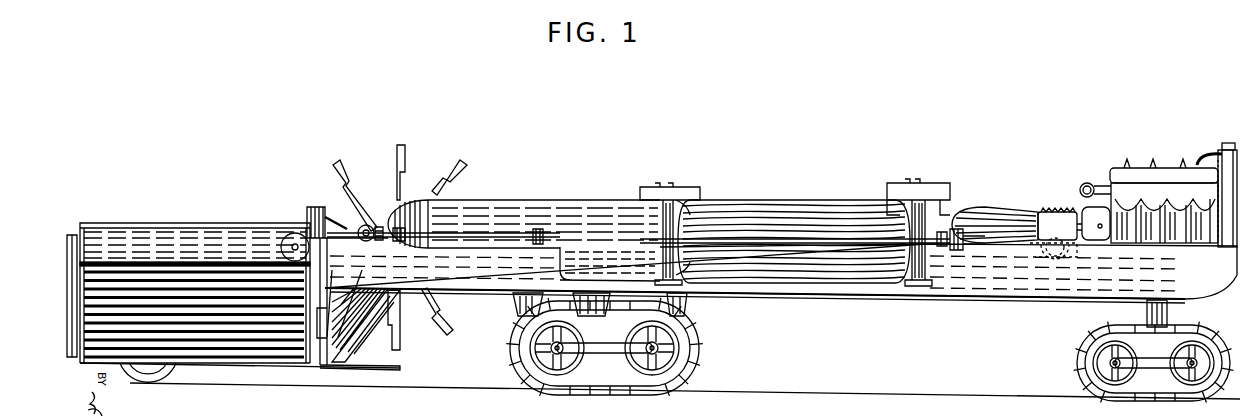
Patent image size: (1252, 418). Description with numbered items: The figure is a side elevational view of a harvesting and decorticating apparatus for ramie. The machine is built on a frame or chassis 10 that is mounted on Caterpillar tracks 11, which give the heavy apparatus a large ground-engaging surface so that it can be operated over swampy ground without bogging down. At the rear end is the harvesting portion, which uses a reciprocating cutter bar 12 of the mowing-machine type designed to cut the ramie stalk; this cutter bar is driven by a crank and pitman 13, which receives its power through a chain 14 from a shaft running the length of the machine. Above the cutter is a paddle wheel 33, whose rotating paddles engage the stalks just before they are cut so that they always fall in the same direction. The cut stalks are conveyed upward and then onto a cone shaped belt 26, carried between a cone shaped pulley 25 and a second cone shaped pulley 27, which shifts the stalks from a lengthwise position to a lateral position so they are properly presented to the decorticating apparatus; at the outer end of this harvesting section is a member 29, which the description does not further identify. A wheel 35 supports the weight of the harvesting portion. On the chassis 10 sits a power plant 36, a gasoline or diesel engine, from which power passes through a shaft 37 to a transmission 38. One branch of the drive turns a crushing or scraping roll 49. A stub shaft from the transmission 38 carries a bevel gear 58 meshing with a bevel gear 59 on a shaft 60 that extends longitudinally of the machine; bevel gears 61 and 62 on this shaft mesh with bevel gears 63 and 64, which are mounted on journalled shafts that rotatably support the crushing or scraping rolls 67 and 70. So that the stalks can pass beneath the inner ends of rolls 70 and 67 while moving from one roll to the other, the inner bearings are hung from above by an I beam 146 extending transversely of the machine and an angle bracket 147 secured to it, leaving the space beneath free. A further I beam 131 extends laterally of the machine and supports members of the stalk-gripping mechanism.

The frame or chassis 10 is at (1005, 298).
The Caterpillar tracks 11 is at (1078, 361).
The reciprocating cutter bar 12 is at (400, 368).
The crank and pitman 13 is at (330, 282).
The chain 14 is at (366, 282).
The cone shaped pulley 25 is at (118, 232).
The cone shaped belt 26 is at (220, 225).
The cone shaped pulley 27 is at (290, 236).
The end gate 29 is at (70, 232).
The paddle wheel 33 is at (397, 332).
The wheel 35 is at (178, 375).
The power plant 36 is at (1165, 177).
The shaft 37 is at (1082, 207).
The transmission 38 is at (1045, 212).
The crushing or scraping roll 49 is at (983, 208).
The bevel gear 58 is at (1061, 250).
The bevel gear 59 is at (1040, 253).
The shaft 60 is at (420, 238).
The bevel gear 61 is at (953, 246).
The bevel gear 62 is at (378, 227).
The bevel gear 63 is at (958, 250).
The bevel gear 64 is at (360, 231).
The crushing or scraping roll 67 is at (795, 205).
The crushing or scraping roll 70 is at (567, 200).
The I beam 131 is at (905, 195).
The I beam 146 is at (656, 189).
The angle bracket 147 is at (690, 196).